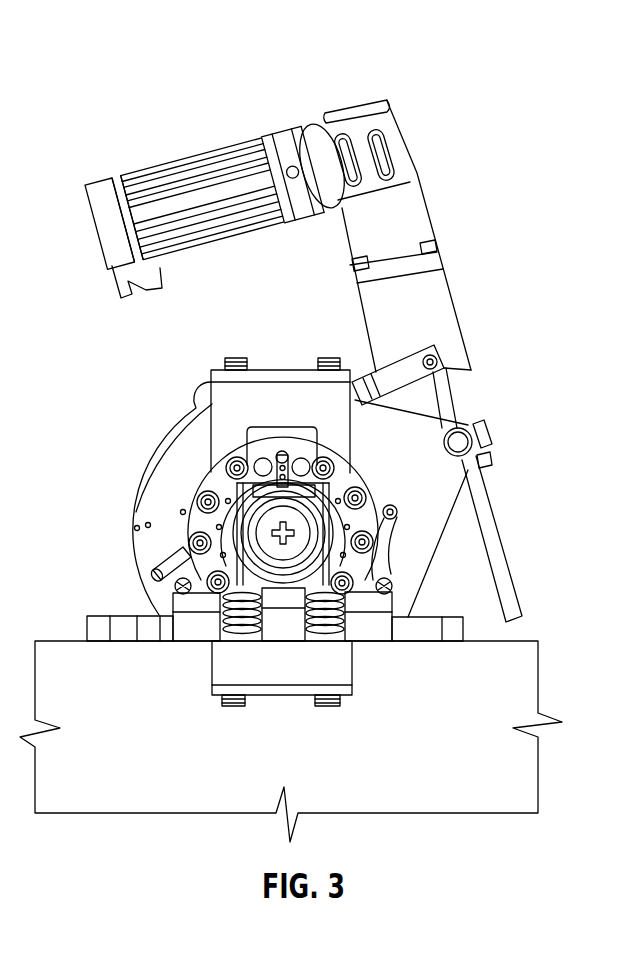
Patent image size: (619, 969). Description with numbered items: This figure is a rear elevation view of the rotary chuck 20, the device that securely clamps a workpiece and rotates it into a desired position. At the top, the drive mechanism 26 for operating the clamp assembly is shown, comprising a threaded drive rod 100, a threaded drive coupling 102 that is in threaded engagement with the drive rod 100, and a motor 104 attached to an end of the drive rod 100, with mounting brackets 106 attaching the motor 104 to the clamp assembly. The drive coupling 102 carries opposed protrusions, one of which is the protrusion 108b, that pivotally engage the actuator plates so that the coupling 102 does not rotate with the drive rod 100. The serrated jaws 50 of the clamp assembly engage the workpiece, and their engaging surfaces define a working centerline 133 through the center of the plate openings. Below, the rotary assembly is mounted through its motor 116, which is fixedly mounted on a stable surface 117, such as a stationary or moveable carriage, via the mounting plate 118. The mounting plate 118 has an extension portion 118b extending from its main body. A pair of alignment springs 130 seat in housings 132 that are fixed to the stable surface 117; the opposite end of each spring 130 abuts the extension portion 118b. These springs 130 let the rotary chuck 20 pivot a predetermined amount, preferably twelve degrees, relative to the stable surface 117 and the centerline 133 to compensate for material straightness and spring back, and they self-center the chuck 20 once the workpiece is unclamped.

The rotary chuck 20 is at (118, 395).
The drive mechanism 26 is at (213, 125).
The second set of serrated jaws 50 is at (167, 470).
The threaded drive rod 100 is at (463, 401).
The threaded drive coupling 102 is at (487, 442).
The motor 104 is at (408, 215).
The mounting brackets 106 is at (378, 382).
The protrusion 108b is at (473, 450).
The motor 116 is at (194, 537).
The stable surface 117 is at (529, 640).
The mounting plate 118 is at (452, 642).
The extension portion 118b is at (281, 628).
The alignment springs 130 is at (233, 627).
The housings 132 is at (187, 628).
The working centerline 133 is at (258, 522).